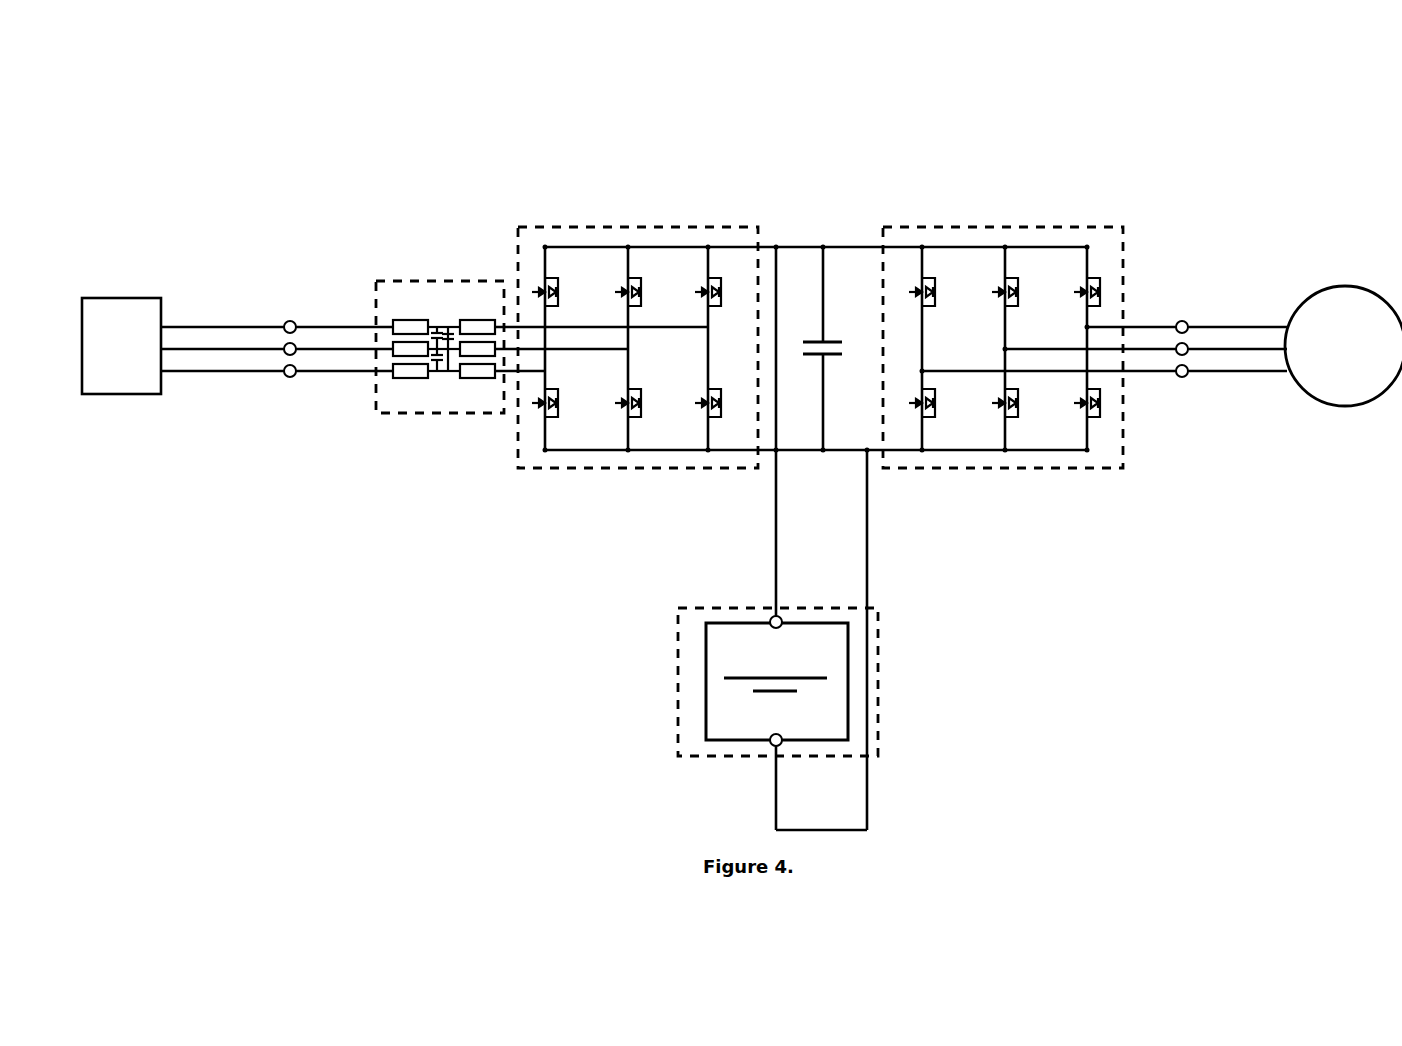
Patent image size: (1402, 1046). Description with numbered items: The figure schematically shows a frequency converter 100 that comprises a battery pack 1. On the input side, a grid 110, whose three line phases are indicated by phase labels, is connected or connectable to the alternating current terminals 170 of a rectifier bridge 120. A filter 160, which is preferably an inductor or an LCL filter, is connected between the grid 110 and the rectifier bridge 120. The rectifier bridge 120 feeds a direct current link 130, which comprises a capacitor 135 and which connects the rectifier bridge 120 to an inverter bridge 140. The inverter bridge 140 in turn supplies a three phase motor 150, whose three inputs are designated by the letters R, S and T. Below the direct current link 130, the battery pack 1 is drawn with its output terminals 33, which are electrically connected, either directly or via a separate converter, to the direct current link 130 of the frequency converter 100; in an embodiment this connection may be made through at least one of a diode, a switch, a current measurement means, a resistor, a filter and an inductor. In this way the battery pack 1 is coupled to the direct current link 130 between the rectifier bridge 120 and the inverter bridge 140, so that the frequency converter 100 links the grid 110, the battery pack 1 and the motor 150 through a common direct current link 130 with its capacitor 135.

The frequency converter 100 is at (724, 434).
The grid 110 is at (121, 346).
The rectifier bridge 120 is at (638, 320).
The direct current link 130 is at (820, 307).
The capacitor 135 is at (884, 445).
The inverter bridge 140 is at (1003, 320).
The motor 150 is at (1289, 346).
The filter 160 is at (440, 319).
The AC terminals 170 is at (280, 308).
The battery pack 1 is at (754, 682).
The output terminals 33 is at (757, 684).